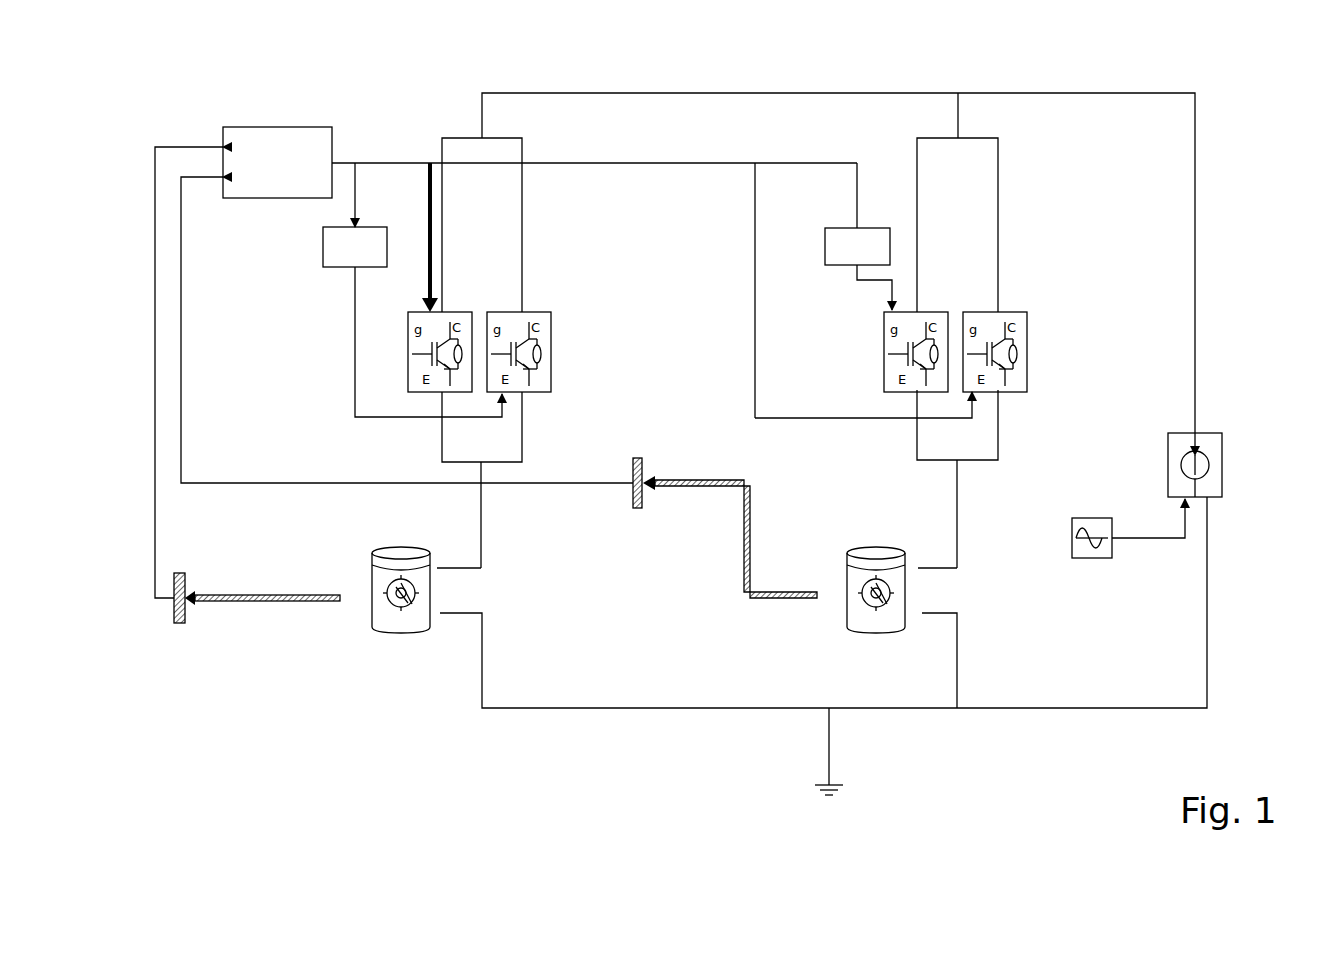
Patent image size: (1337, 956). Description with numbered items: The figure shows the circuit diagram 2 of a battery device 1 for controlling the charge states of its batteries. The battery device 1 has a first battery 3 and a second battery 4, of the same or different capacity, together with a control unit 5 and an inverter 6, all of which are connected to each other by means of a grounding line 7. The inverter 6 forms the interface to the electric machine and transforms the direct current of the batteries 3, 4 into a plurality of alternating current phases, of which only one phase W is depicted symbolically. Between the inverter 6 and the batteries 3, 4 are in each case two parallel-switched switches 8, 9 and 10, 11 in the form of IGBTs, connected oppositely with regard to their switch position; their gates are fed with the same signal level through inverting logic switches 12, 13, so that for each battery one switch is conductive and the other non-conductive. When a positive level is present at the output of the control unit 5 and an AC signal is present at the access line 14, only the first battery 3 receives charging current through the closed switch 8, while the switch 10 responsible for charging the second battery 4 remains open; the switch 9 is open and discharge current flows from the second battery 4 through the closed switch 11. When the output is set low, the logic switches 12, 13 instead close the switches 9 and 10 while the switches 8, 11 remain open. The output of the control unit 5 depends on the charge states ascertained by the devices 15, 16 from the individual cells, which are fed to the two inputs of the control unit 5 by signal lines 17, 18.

The battery device 1 is at (1262, 130).
The circuit diagram 2 is at (1218, 347).
The first battery 3 is at (372, 620).
The second battery 4 is at (847, 620).
The control unit 5 is at (290, 202).
The inverter 6 is at (1218, 445).
The grounding line 7 is at (830, 748).
The switch 8 is at (408, 378).
The switch 9 is at (552, 378).
The switch 10 is at (884, 368).
The switch 11 is at (1027, 372).
The logic switch 12 is at (387, 252).
The logic switch 13 is at (825, 243).
The access line 14 is at (1195, 235).
The device 15 is at (180, 623).
The device 16 is at (640, 508).
The signal line 17 is at (270, 483).
The signal line 18 is at (155, 428).
The phase W is at (1100, 518).